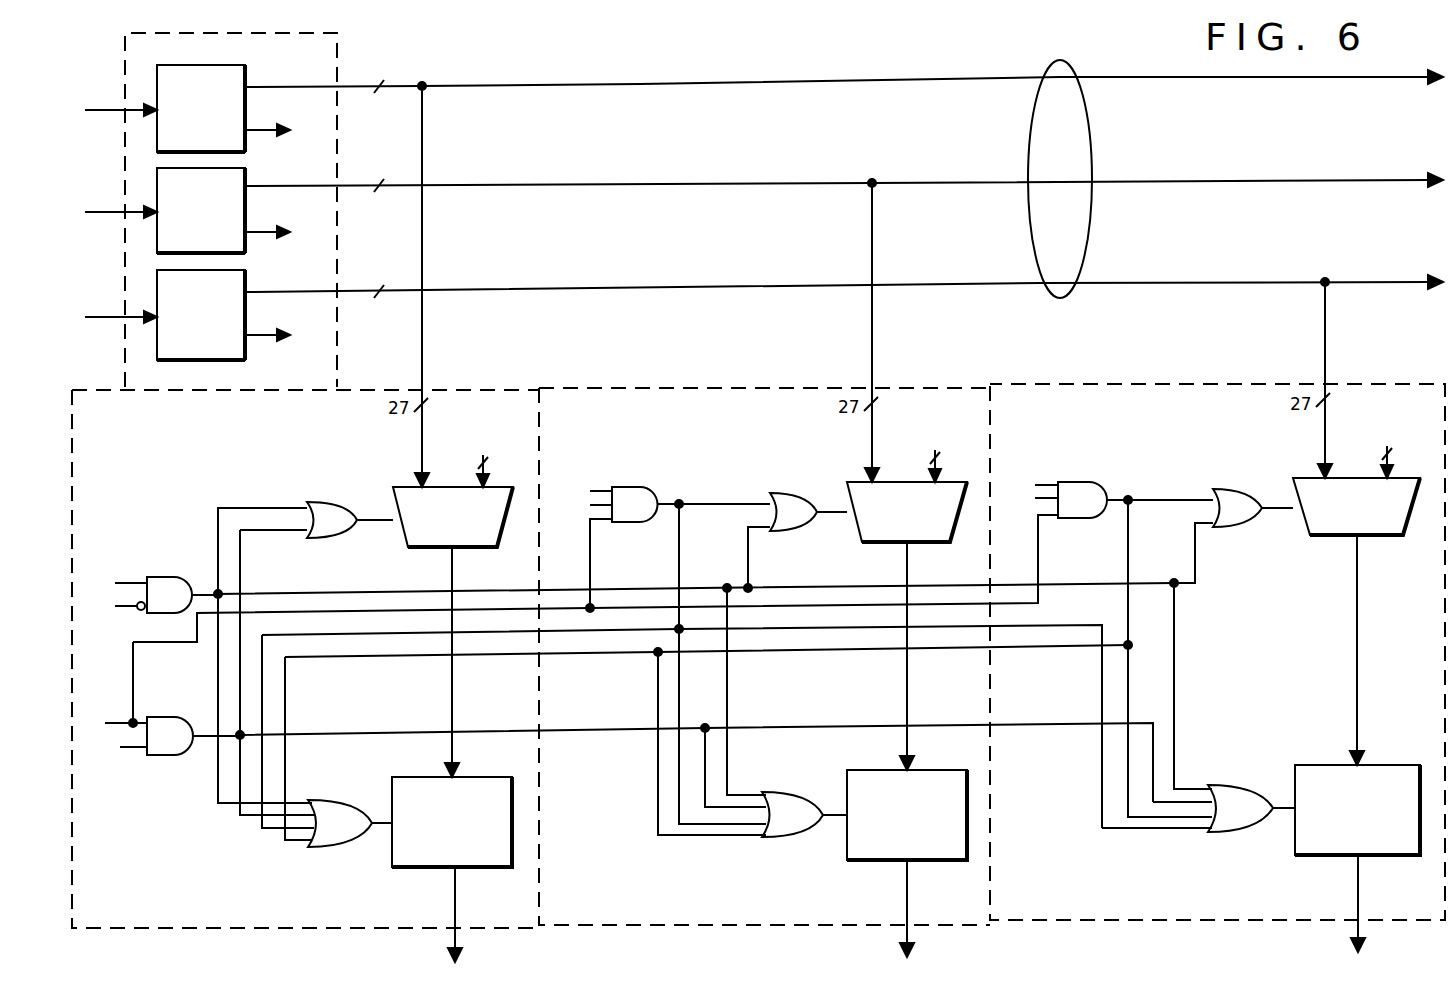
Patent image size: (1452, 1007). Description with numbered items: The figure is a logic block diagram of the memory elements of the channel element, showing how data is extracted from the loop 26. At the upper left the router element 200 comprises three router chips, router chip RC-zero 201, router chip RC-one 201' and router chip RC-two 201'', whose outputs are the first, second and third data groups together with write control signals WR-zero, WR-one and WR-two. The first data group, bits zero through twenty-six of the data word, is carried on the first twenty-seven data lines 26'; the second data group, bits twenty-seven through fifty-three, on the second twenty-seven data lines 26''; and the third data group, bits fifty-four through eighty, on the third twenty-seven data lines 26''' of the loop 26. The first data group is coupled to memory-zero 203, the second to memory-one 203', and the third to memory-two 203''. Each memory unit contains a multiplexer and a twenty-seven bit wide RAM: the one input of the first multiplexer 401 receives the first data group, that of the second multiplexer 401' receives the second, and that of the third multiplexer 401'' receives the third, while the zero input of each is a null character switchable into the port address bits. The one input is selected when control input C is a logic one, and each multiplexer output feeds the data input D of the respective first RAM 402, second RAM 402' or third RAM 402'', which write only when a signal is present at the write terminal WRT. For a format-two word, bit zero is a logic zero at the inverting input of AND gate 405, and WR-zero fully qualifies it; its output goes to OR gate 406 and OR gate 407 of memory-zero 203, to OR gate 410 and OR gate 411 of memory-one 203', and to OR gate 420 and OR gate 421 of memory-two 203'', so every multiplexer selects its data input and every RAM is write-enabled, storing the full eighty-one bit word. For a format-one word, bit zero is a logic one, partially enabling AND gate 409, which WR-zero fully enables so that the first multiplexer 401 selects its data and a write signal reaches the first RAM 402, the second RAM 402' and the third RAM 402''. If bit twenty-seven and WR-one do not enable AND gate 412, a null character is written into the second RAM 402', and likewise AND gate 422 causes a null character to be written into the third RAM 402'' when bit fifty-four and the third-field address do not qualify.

The loop 26 is at (1072, 167).
The first 27 data lines 26' is at (844, 67).
The second 27 data lines 26'' is at (844, 167).
The third 27 data lines 26''' is at (844, 274).
The router element 200 is at (165, 57).
The router chip RC0 201 is at (206, 106).
The router chip RC1 201' is at (206, 207).
The router chip RC2 201'' is at (206, 313).
The memory 0 203 is at (306, 659).
The memory 1 203' is at (764, 656).
The memory 2 203'' is at (1217, 652).
The MUX0 401 is at (455, 589).
The MUX1 401' is at (909, 584).
The MUX2 401'' is at (1358, 580).
The RAM0 402 is at (459, 851).
The RAM1 402' is at (915, 845).
The RAM2 402'' is at (1364, 840).
The AND gate 405 is at (155, 577).
The OR gate 406 is at (318, 502).
The OR gate 407 is at (330, 800).
The AND gate 409 is at (165, 757).
The OR gate 410 is at (777, 490).
The OR gate 411 is at (775, 792).
The AND gate 412 is at (635, 487).
The OR gate 420 is at (1222, 487).
The OR gate 421 is at (1225, 785).
The AND gate 422 is at (1080, 482).